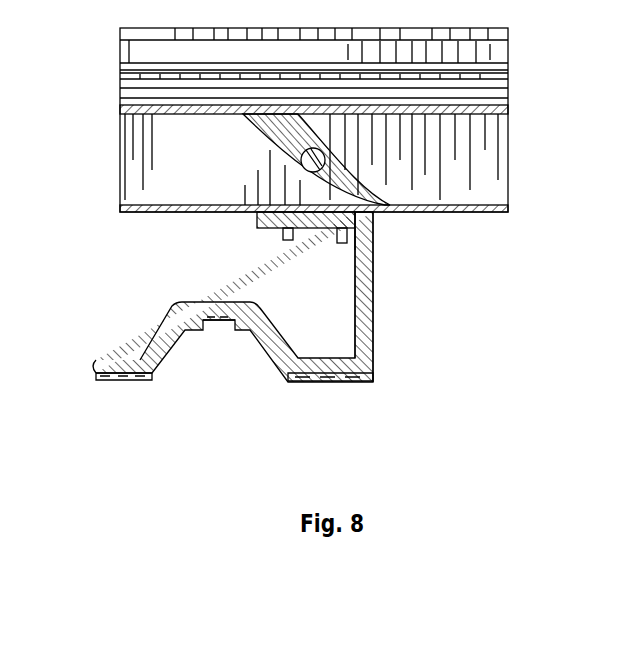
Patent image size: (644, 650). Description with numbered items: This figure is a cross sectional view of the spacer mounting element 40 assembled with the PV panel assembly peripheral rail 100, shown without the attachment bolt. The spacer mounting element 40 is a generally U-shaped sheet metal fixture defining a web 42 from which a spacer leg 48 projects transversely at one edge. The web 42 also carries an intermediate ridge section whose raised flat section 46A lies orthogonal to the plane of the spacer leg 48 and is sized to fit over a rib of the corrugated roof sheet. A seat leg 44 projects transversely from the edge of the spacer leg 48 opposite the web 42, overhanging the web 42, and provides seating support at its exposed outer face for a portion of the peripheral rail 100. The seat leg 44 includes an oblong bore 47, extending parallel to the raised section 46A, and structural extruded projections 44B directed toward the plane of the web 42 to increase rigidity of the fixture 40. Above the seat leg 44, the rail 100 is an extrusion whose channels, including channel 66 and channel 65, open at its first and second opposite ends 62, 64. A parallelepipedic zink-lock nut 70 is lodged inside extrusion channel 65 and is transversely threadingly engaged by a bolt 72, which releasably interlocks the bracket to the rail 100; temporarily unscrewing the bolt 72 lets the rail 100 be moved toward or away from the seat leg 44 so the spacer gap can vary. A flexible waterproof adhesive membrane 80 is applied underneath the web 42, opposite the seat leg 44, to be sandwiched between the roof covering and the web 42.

The spacer mounting element 40 is at (286, 318).
The web 42 is at (368, 382).
The seat leg 44 is at (280, 238).
The structural extruded projections 44B is at (398, 254).
The raised flat section 46A is at (200, 302).
The oblong bore 47 is at (315, 235).
The spacer leg 48 is at (367, 267).
The first end 62 is at (118, 42).
The second end 64 is at (510, 53).
The extrusion channel 65 is at (495, 163).
The extrusion channel 66 is at (510, 84).
The zink-lock nut 70 is at (373, 215).
The bolt 72 is at (283, 152).
The flexible waterproof adhesive membrane 80 is at (150, 375).
The PV panel assembly peripheral rail 100 is at (512, 110).